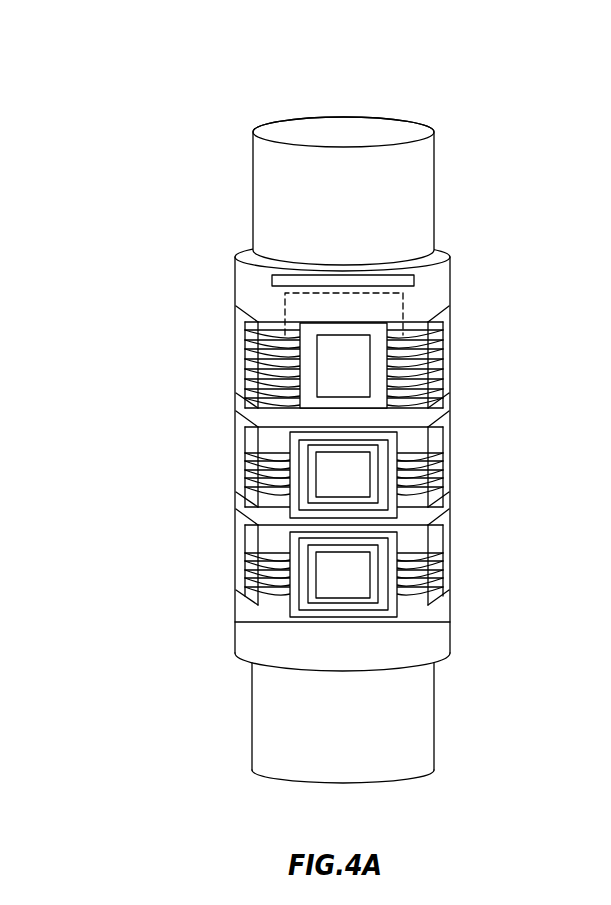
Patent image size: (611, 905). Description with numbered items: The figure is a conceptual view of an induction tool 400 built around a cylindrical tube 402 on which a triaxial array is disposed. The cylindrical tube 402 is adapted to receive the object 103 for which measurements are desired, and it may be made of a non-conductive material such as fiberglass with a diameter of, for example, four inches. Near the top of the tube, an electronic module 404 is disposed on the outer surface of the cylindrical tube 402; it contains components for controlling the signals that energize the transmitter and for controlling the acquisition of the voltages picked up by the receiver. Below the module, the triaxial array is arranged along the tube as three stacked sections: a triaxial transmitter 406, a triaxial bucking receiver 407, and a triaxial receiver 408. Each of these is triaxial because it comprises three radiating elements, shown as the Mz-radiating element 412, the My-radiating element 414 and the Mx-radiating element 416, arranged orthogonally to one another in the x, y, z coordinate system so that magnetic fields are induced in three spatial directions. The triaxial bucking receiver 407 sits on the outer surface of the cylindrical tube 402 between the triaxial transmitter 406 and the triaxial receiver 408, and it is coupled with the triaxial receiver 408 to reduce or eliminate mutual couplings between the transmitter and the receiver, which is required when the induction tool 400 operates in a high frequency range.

The object 103 is at (358, 213).
The induction tool 400 is at (178, 642).
The cylindrical tube 402 is at (427, 638).
The electronic module 404 is at (284, 281).
The triaxial transmitter 406 is at (410, 335).
The triaxial bucking receiver 407 is at (413, 445).
The triaxial receiver 408 is at (413, 538).
The radiating element 412 is at (276, 357).
The radiating element 414 is at (340, 377).
The radiating element 416 is at (256, 382).